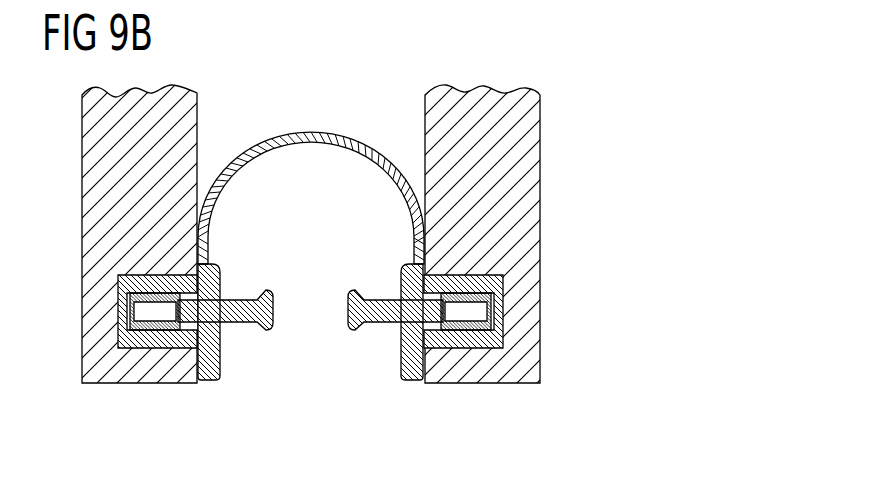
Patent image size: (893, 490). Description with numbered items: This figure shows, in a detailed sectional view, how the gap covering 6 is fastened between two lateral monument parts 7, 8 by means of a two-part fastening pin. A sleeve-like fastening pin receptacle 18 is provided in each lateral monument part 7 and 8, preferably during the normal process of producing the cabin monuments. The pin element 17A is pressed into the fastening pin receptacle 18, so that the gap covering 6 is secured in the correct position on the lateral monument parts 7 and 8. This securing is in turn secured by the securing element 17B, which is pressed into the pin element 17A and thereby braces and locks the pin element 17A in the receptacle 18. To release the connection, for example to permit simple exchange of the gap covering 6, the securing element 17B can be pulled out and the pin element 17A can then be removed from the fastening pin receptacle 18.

The gap covering 6 is at (308, 155).
The lateral monument part 7 is at (96, 220).
The lateral monument part 8 is at (527, 213).
The pin element 17A is at (152, 323).
The securing element 17B is at (243, 308).
The fastening pin receptacle 18 is at (163, 338).